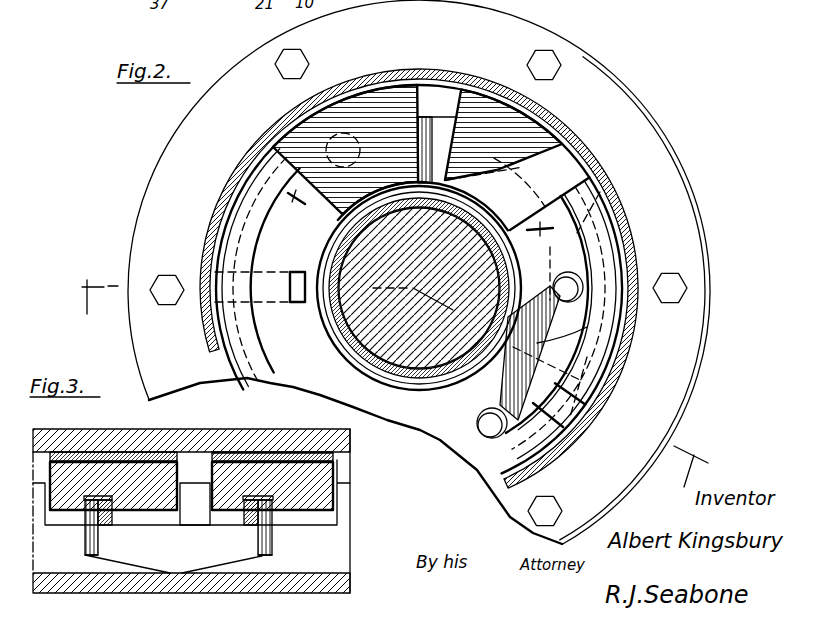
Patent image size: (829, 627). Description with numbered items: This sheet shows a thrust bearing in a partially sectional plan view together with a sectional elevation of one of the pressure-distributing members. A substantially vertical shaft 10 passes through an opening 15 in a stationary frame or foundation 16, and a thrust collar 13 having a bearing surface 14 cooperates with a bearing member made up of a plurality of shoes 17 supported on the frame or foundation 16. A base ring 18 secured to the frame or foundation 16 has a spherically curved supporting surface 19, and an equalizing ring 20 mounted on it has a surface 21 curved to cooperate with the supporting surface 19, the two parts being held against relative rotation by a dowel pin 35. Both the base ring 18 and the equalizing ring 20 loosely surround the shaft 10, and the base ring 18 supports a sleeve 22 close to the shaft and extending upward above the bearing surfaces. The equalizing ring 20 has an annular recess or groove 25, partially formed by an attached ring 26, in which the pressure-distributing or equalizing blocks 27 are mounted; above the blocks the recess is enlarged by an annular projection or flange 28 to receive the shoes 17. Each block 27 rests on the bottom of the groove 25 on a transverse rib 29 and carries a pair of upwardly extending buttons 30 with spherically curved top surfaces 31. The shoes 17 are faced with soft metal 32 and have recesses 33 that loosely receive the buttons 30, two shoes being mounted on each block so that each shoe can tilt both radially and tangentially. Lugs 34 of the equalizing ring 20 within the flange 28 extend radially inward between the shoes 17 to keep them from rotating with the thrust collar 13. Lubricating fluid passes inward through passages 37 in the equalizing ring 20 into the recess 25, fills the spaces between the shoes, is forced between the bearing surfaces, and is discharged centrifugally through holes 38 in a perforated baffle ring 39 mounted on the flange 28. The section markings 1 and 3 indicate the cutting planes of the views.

In FIG. 2, the section line 1- 1 is at (395, 383).
In FIG. 2, the section line 3- 3 is at (420, 213).
In FIG. 2, the shaft 10 is at (465, 256).
In FIG. 3, the thrust collar 13 is at (347, 440).
In FIG. 3, the bearing surface 14 is at (350, 453).
In FIG. 2, the opening 15 is at (567, 6).
In FIG. 2, the frame or foundation 16 is at (634, 0).
In FIG. 2, the shoes 17 is at (353, 113).
In FIG. 3, the shoes 17 is at (130, 450).
In FIG. 2, the base ring 18 is at (672, 4).
In FIG. 2, the supporting surface 19 is at (219, 6).
In FIG. 2, the equalizing ring 20 is at (237, 355).
In FIG. 3, the equalizing ring 20 is at (338, 590).
In FIG. 2, the surface 21 is at (290, 340).
In FIG. 2, the sleeve 22 is at (505, 268).
In FIG. 2, the annular recess or groove 25 is at (600, 245).
In FIG. 3, the annular recess or groove 25 is at (350, 543).
In FIG. 2, the attached ring 26 is at (330, 247).
In FIG. 2, the pressure-distributing or equalizing blocks 27 is at (470, 72).
In FIG. 3, the pressure-distributing or equalizing blocks 27 is at (280, 545).
In FIG. 2, the annular projection or flange 28 is at (567, 250).
In FIG. 2, the transverse rib 29 is at (551, 348).
In FIG. 3, the transverse rib 29 is at (180, 573).
In FIG. 2, the projections or buttons 30 is at (575, 280).
In FIG. 3, the projections or buttons 30 is at (83, 512).
In FIG. 3, the spherically curved top surfaces 31 is at (95, 527).
In FIG. 3, the soft metal facing 32 is at (103, 451).
In FIG. 3, the recesses 33 is at (333, 463).
In FIG. 2, the lugs or projections 34 is at (253, 163).
In FIG. 3, the lugs or projections 34 is at (350, 497).
In FIG. 2, the dowel pin 35 is at (418, 263).
In FIG. 2, the passages 37 is at (297, 272).
In FIG. 2, the holes 38 is at (410, 70).
In FIG. 2, the perforated baffle ring 39 is at (270, 133).